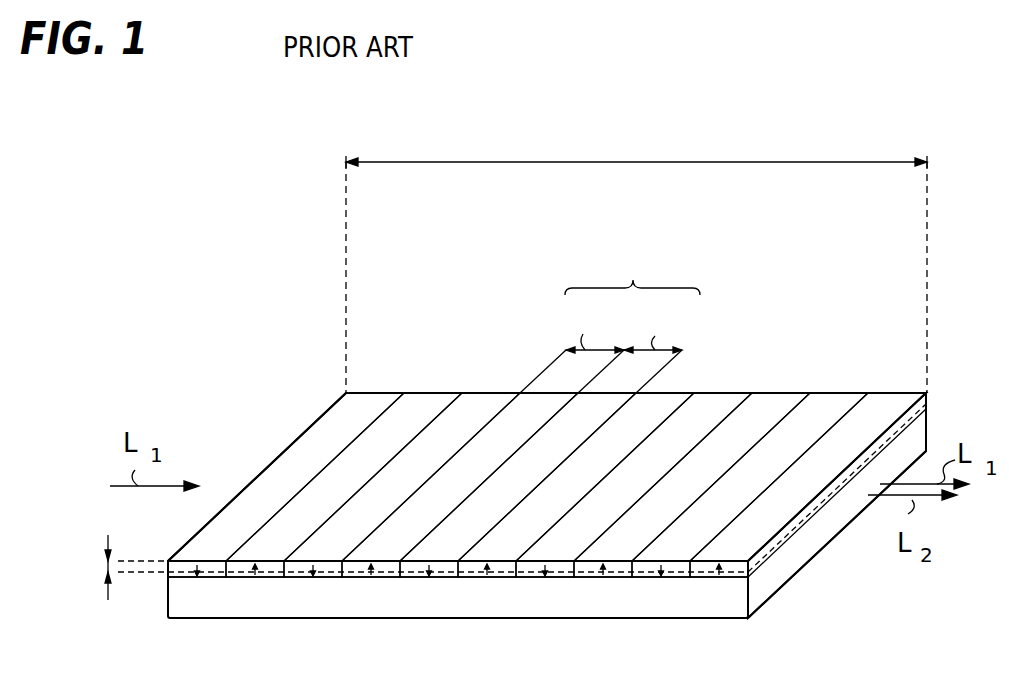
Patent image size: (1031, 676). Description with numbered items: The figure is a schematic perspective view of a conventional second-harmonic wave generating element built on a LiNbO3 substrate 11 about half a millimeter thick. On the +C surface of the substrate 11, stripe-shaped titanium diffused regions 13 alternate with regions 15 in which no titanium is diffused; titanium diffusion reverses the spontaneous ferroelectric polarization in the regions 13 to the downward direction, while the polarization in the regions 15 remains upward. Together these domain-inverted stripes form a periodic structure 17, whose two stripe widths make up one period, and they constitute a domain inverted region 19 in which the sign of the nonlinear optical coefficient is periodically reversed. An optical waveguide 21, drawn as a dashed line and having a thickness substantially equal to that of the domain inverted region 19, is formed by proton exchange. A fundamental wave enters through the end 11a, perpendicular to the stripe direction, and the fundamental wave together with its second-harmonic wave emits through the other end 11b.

The LiNbO3 substrate 11 is at (640, 602).
The end 11a is at (296, 422).
The another end 11b is at (918, 429).
The titanium diffused regions 13 is at (505, 410).
The regions in which titanium is not diffused 15 is at (450, 406).
The periodic structure 17 is at (612, 320).
The domain inverted region 19 is at (634, 162).
The optical waveguide 21 is at (102, 566).